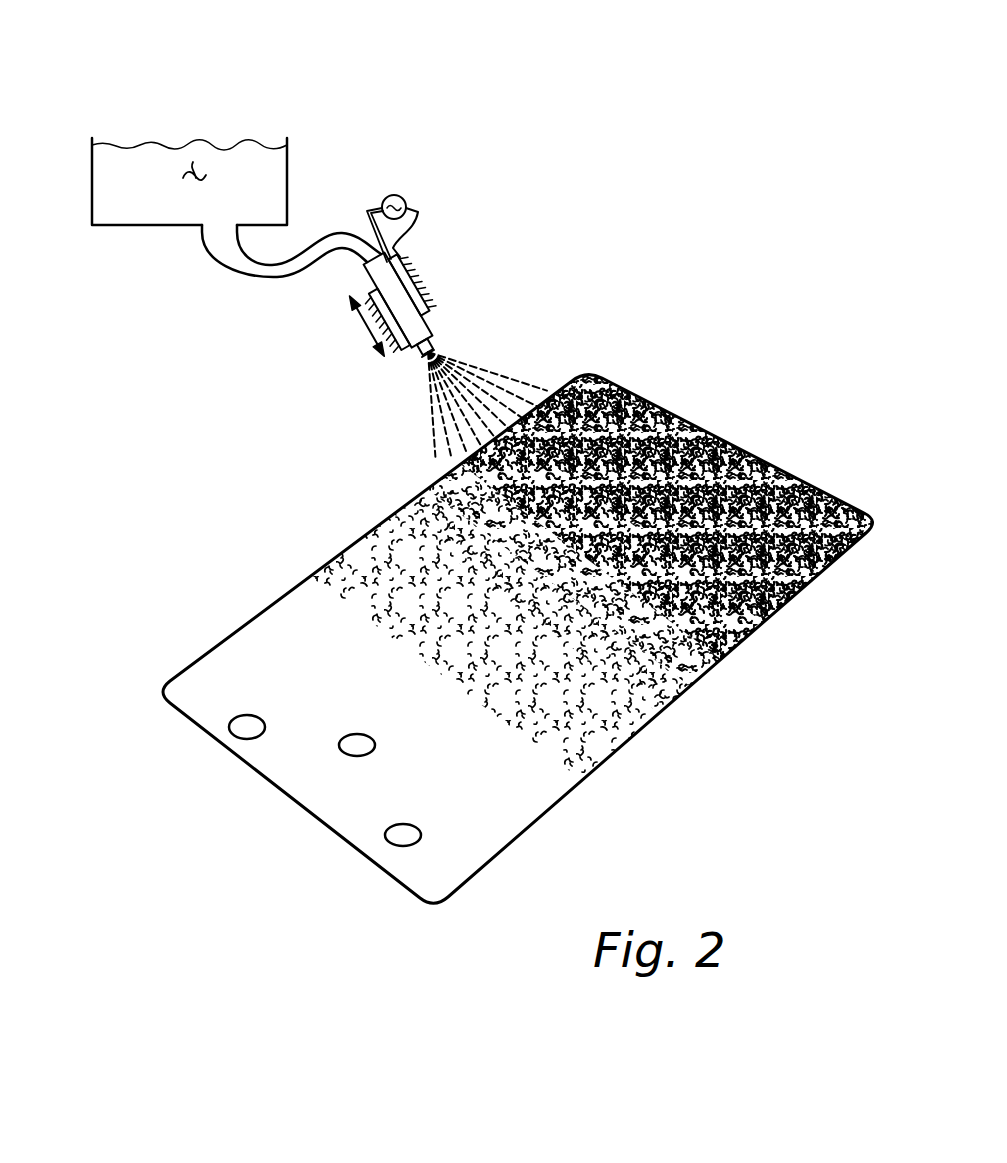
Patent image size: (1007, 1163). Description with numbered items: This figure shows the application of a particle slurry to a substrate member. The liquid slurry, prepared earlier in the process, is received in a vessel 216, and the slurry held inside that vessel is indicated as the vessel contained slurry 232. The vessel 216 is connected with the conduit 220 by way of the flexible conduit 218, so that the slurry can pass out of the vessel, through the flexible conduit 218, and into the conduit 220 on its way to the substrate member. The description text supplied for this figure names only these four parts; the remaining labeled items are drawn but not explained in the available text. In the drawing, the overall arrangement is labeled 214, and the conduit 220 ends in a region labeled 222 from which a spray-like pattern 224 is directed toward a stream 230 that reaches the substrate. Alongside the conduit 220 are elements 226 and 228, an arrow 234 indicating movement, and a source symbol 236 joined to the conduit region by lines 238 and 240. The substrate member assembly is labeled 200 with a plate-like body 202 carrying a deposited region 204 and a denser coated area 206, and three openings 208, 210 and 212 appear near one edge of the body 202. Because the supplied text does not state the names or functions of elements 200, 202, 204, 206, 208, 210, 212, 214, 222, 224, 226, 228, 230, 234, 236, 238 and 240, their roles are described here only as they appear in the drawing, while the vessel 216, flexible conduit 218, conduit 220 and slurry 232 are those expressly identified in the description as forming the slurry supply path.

The coated electrode plate assembly 200 is at (559, 525).
The substrate plate 202 is at (268, 600).
The deposited particles 204 is at (390, 555).
The coated region 206 is at (702, 428).
The hole 208 is at (243, 738).
The hole 210 is at (345, 757).
The hole 212 is at (395, 848).
The spray coating apparatus 214 is at (431, 43).
The vessel 216 is at (92, 200).
The flexible conduit 218 is at (277, 284).
The conduit 220 is at (412, 349).
The nozzle tip 222 is at (433, 341).
The spray 224 is at (425, 362).
The electrodes 226 is at (428, 316).
The insulation 228 is at (418, 268).
The spray stream direction 230 is at (520, 368).
The vessel contained slurry 232 is at (198, 170).
The electrode movement arrow 234 is at (355, 322).
The AC power source 236 is at (393, 197).
The electrical lead 238 is at (418, 212).
The electrical lead 240 is at (364, 220).